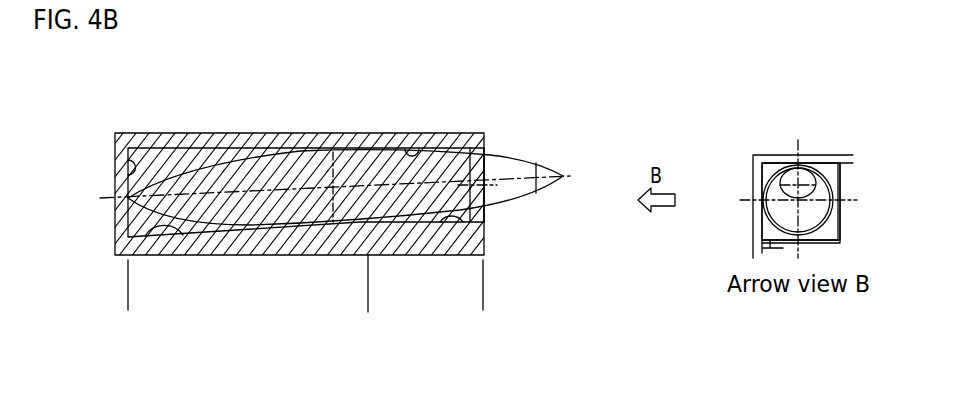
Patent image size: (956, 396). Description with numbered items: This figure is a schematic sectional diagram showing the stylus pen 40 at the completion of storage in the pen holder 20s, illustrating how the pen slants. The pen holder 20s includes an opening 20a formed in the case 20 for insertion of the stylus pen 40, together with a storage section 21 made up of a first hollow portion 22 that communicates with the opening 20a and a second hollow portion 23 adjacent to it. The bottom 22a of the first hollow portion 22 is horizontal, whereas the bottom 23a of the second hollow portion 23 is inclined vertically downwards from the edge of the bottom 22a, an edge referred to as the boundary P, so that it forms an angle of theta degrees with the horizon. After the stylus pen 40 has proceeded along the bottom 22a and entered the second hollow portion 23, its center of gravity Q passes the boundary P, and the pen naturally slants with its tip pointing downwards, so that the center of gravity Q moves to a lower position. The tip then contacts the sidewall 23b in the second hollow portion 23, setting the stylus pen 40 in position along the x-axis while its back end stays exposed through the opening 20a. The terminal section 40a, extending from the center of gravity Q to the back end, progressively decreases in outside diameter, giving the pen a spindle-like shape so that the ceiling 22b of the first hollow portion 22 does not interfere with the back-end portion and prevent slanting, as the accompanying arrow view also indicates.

The case 20 is at (485, 250).
The opening 20a is at (490, 157).
The pen holder 20s is at (402, 54).
The storage section 21 is at (483, 322).
The first hollow portion 22 is at (483, 277).
The bottom of the first hollow portion 22a is at (433, 215).
The ceiling of the first hollow portion 22b is at (428, 148).
The second hollow portion 23 is at (368, 277).
The bottom of the second hollow portion 23a is at (138, 238).
The sidewall 23b is at (115, 160).
The stylus pen 40 is at (516, 163).
The terminal section 40a is at (503, 203).
The boundary P is at (368, 222).
The center of gravity Q is at (333, 178).